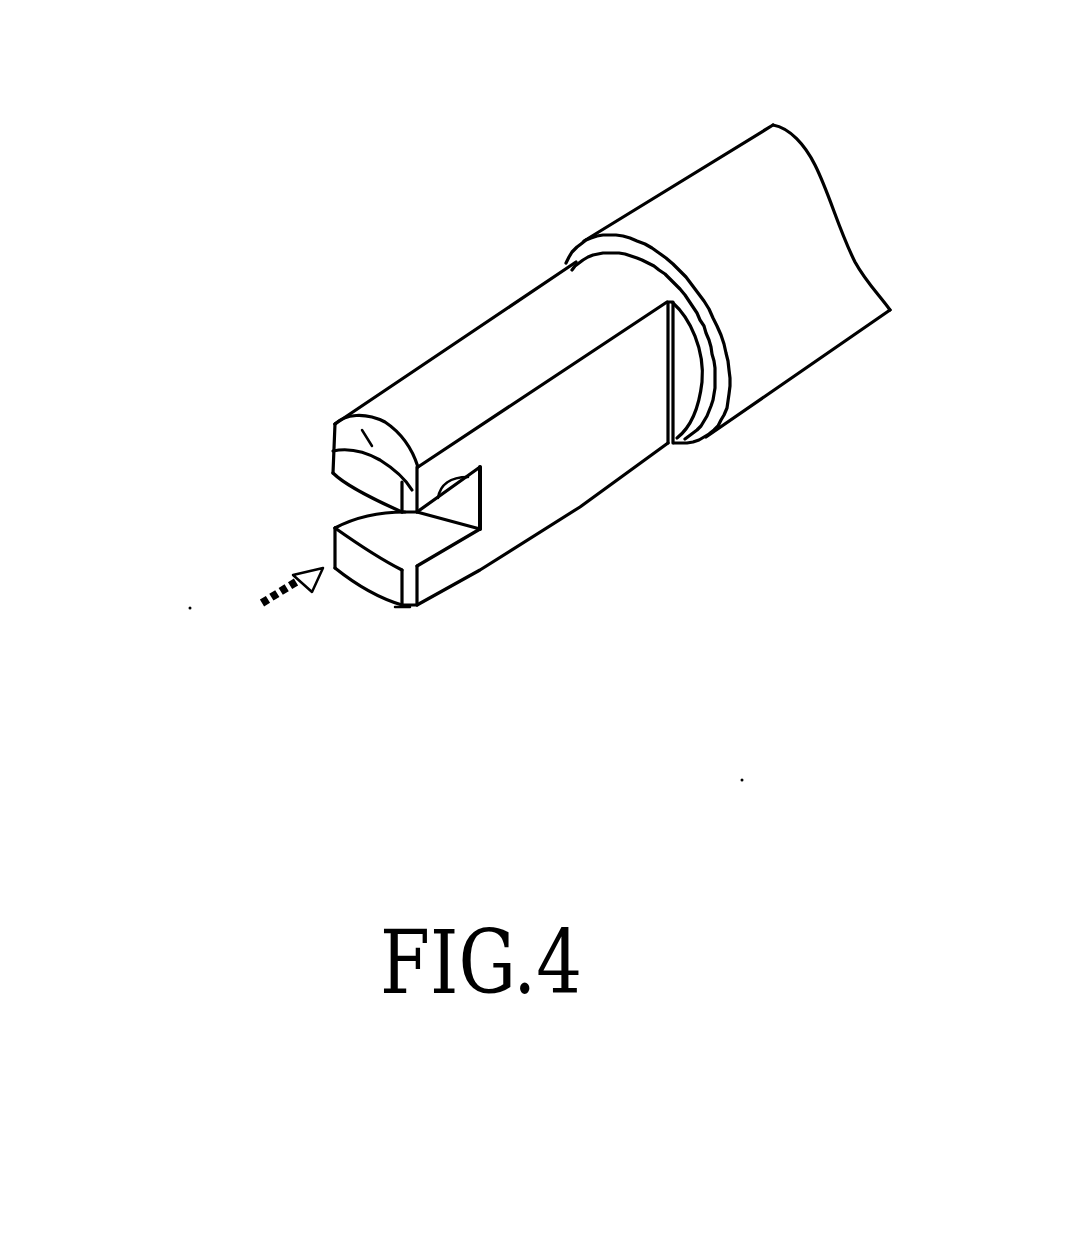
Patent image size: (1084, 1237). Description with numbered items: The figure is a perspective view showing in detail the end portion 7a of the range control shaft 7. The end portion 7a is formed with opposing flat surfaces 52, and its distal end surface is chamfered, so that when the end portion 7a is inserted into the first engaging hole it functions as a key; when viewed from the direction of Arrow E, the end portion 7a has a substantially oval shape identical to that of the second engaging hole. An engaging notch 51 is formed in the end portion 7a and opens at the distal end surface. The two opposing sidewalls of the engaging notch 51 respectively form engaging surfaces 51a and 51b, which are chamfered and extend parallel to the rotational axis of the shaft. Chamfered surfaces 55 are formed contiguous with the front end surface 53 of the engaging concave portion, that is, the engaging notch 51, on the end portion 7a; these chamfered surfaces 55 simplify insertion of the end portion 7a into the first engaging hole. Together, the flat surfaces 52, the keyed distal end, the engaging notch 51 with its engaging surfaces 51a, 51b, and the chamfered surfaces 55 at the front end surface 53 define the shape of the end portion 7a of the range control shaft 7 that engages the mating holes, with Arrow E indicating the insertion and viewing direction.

The range control shaft 7 is at (688, 153).
The end portion 7a is at (513, 333).
The engaging notch 51 is at (361, 518).
The engaging surface 51a is at (480, 467).
The engaging surface 51b is at (423, 547).
The flat surfaces 52 is at (573, 460).
The front end surface 53 is at (345, 466).
The chamfered surfaces 55 is at (370, 445).
The Arrow E is at (270, 588).